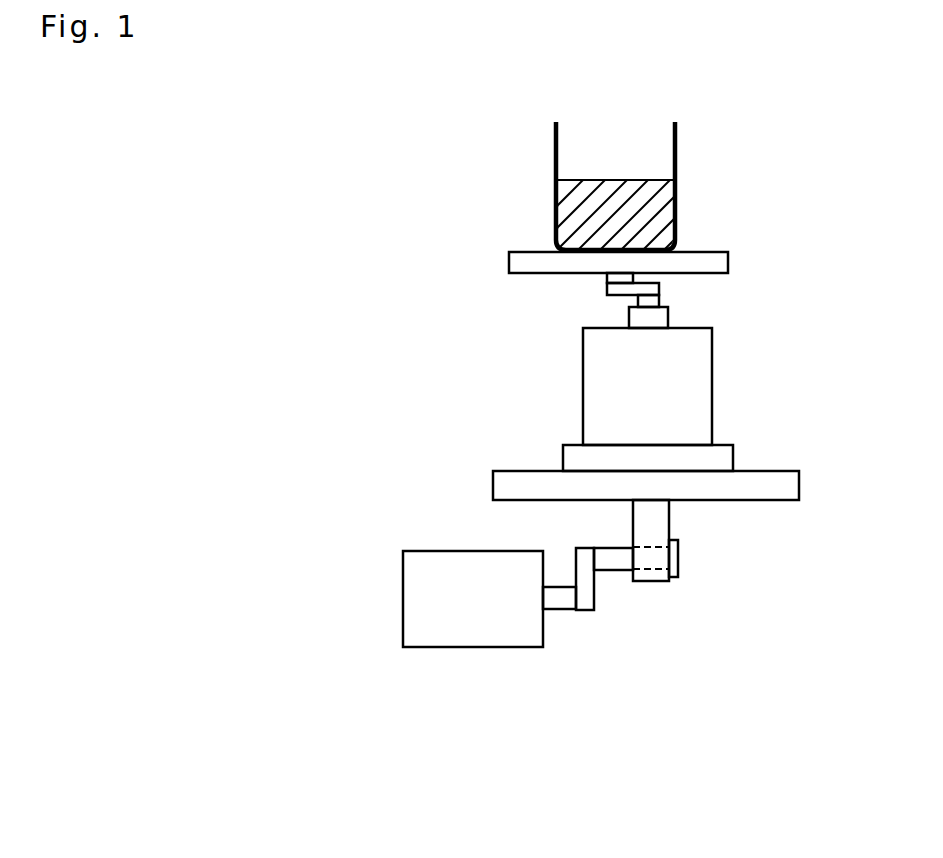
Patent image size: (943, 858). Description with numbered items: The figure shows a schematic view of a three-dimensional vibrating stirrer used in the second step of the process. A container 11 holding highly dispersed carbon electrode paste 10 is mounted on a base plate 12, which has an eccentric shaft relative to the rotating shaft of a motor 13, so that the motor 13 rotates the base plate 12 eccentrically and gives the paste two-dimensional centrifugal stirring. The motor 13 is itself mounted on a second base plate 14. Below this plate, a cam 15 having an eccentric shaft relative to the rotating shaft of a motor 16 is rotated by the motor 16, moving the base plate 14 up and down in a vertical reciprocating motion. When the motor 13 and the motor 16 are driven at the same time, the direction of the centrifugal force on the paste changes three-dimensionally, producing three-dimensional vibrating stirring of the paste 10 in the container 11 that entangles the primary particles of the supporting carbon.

The highly dispersed carbon electrode paste 10 is at (578, 206).
The container 11 is at (677, 148).
The base plate 12 is at (728, 262).
The motor 13 is at (687, 388).
The base plate 14 is at (773, 470).
The cam 15 is at (595, 585).
The motor 16 is at (485, 626).